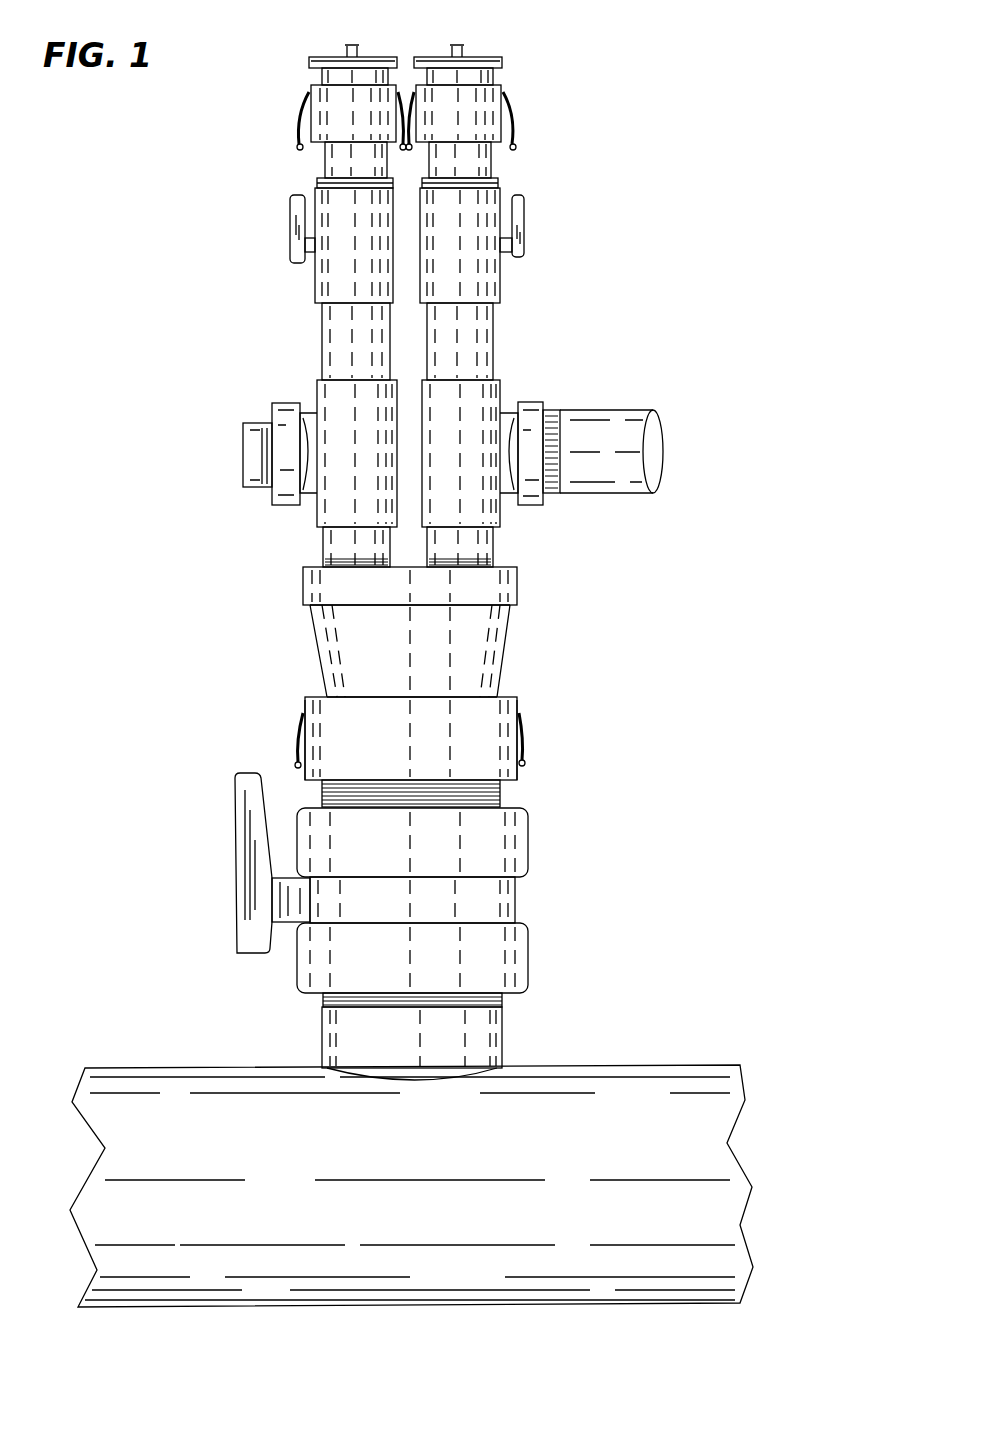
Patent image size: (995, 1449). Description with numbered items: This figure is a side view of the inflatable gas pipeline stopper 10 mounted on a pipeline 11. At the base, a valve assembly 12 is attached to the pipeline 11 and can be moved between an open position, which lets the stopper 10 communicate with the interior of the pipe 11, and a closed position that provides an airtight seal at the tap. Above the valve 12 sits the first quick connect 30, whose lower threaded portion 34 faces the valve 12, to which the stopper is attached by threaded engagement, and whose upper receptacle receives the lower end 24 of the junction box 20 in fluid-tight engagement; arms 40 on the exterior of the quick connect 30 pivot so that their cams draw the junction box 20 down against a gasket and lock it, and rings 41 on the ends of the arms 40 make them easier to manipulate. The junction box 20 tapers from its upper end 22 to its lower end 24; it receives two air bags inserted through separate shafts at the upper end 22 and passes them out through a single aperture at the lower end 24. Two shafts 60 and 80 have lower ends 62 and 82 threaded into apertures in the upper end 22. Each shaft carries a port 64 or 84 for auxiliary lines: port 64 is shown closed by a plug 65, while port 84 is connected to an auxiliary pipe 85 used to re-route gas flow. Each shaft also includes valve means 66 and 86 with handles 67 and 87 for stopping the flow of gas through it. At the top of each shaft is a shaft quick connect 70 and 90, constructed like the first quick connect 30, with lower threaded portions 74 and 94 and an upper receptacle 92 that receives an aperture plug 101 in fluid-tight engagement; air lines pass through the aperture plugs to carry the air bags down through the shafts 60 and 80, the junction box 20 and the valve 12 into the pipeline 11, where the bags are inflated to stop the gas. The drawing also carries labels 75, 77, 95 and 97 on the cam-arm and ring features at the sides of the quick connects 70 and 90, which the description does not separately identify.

The inflatable gas pipeline stopper 10 is at (493, 50).
The pipeline 11 is at (608, 1066).
The valve assembly 12 is at (540, 900).
The junction box 20 is at (442, 663).
The upper end 22 is at (515, 565).
The lower end 24 is at (505, 695).
The first quick connect 30 is at (422, 750).
The lower threaded portion 34 is at (505, 795).
The arms 40 is at (300, 735).
The rings 41 is at (297, 763).
The shaft 60 is at (310, 345).
The lower end of shaft 62 is at (320, 562).
The port 64 is at (248, 517).
The plug 65 is at (258, 423).
The valve means 66 is at (290, 267).
The handle 67 is at (290, 230).
The shaft quick connect 70 is at (300, 75).
The lower threaded portion 74 is at (330, 185).
The first coupling cam arm 75 is at (300, 130).
The first cam arm ring 77 is at (297, 147).
The shaft 80 is at (505, 330).
The lower end of shaft 82 is at (500, 547).
The port 84 is at (545, 395).
The auxiliary pipe 85 is at (585, 410).
The valve means 86 is at (533, 218).
The handle 87 is at (523, 235).
The shaft quick connect 90 is at (532, 123).
The upper receptacle 92 is at (500, 77).
The lower threaded portion 94 is at (497, 178).
The second coupling cam arm 95 is at (508, 108).
The second cam arm ring 97 is at (513, 145).
The aperture plug 101 is at (325, 45).